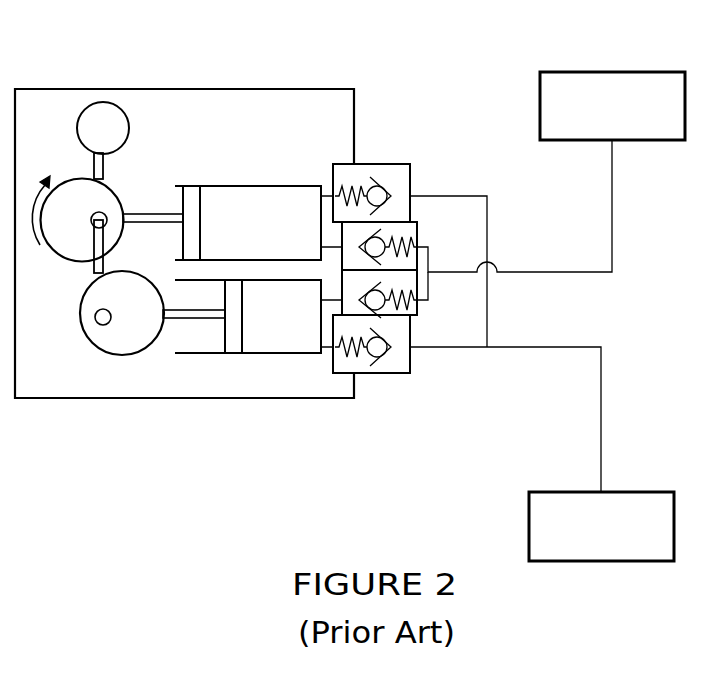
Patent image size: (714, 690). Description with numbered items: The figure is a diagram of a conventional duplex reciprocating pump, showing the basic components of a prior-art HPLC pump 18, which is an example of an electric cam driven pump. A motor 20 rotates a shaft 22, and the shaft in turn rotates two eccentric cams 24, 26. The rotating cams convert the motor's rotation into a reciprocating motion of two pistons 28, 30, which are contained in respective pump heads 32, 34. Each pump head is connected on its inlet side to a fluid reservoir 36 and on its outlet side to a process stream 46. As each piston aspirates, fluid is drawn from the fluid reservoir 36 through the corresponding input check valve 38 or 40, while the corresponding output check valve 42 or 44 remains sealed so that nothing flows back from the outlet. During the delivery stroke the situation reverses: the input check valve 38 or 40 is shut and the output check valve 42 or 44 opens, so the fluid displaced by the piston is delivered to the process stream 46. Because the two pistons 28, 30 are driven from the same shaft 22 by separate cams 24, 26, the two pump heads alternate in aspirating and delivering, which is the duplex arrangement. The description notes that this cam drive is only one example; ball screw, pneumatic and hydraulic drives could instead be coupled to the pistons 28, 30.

The HPLC pump 18 is at (52, 89).
The motor 20 is at (129, 122).
The shaft 22 is at (104, 157).
The eccentric cam 24 is at (81, 262).
The eccentric cam 26 is at (105, 355).
The piston 28 is at (137, 214).
The piston 30 is at (211, 319).
The pump head 32 is at (233, 187).
The pump head 34 is at (292, 354).
The fluid reservoir 36 is at (637, 492).
The input check valve 38 is at (384, 164).
The input check valve 40 is at (400, 374).
The output check valve 42 is at (418, 220).
The output check valve 44 is at (418, 316).
The process stream 46 is at (612, 72).